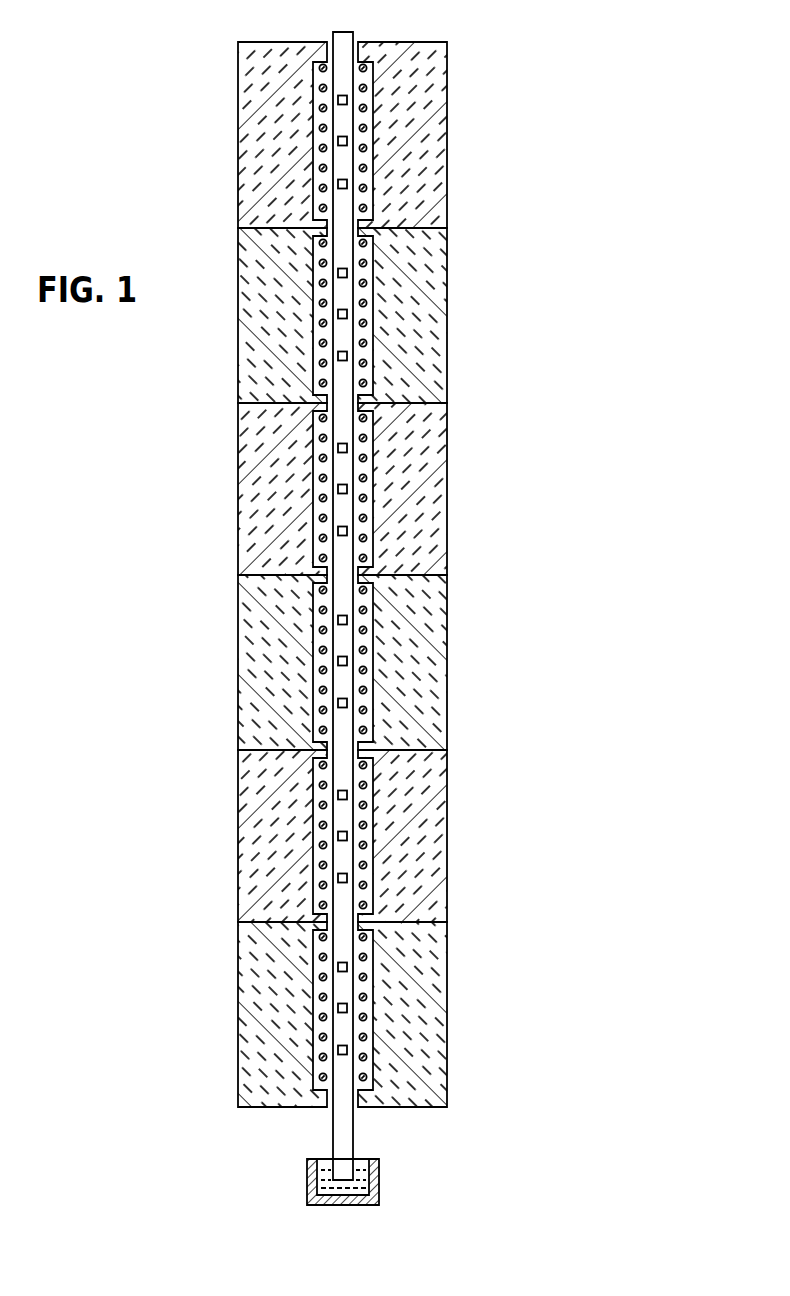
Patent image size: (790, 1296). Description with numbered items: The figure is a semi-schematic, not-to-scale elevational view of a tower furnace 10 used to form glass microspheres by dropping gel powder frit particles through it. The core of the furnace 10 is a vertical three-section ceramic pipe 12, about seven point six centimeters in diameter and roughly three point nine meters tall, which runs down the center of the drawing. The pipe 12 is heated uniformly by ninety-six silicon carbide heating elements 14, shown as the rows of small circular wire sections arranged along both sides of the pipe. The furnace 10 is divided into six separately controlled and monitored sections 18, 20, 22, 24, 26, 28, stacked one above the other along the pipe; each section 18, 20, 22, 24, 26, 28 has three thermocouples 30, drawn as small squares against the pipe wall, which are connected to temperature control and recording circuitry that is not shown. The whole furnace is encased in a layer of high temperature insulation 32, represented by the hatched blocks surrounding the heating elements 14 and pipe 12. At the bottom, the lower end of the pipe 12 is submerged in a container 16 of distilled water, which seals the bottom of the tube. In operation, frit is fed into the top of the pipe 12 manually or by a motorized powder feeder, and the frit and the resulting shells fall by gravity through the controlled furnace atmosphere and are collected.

The furnace 10 is at (222, 339).
The ceramic pipe 12 is at (345, 36).
The silicon carbide heating elements 14 is at (367, 190).
The container 16 is at (380, 1196).
The furnace section 18 is at (255, 102).
The furnace section 20 is at (264, 375).
The furnace section 22 is at (264, 538).
The furnace section 24 is at (264, 685).
The furnace section 26 is at (272, 830).
The furnace section 28 is at (264, 1021).
The thermocouples 30 is at (338, 184).
The high temperature insulation 32 is at (447, 812).